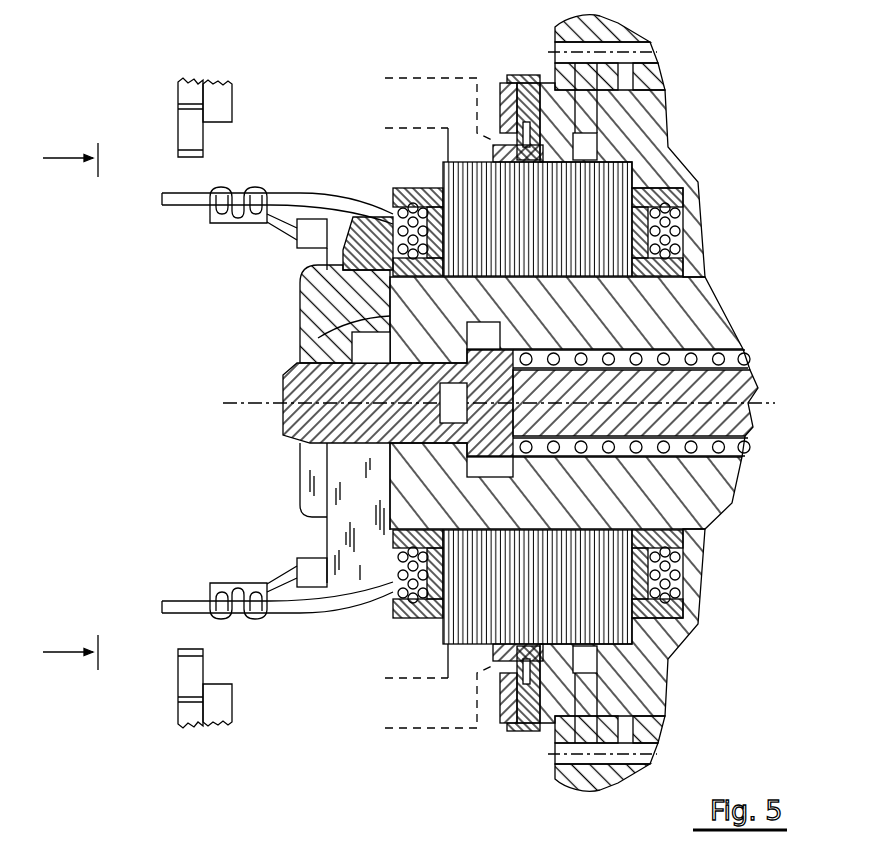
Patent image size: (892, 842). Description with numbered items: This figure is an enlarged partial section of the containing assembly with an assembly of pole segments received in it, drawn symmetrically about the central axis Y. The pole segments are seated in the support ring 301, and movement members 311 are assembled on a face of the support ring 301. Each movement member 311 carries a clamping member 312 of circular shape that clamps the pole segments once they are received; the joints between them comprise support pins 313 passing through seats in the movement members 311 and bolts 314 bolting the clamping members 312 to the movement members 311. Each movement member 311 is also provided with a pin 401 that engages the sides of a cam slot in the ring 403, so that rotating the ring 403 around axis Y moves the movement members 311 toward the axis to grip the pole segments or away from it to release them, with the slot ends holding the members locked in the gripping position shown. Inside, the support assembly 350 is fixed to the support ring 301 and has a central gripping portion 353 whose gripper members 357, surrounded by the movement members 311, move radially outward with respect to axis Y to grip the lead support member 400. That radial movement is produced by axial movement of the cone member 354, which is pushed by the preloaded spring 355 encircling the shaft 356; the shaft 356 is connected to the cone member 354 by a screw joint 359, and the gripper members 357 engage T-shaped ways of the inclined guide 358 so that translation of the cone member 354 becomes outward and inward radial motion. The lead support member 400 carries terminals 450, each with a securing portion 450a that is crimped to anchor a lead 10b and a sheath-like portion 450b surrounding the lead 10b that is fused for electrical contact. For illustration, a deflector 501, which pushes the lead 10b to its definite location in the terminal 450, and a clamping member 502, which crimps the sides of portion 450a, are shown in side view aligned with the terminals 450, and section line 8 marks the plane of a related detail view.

The section line 8 is at (67, 158).
The lead 10b is at (162, 200).
The support ring 301 is at (648, 137).
The movement member 311 is at (605, 18).
The clamping member 312 is at (500, 155).
The support pin 313 is at (525, 75).
The bolt 314 is at (498, 158).
The support assembly 350 is at (727, 270).
The central gripping portion 353 is at (690, 497).
The cone member 354 is at (310, 420).
The preloaded spring 355 is at (737, 443).
The shaft 356 is at (737, 393).
The gripper member 357 is at (327, 303).
The inclined guide 358 is at (347, 323).
The screw joint 359 is at (507, 350).
The lead support member 400 is at (337, 240).
The pin 401 is at (640, 48).
The ring 403 is at (658, 78).
The terminal 450 is at (220, 247).
The securing portion 450a is at (218, 193).
The sheath portion 450b is at (257, 200).
The deflector 501 is at (187, 95).
The clamping member 502 is at (223, 102).
The central axis Y is at (247, 403).